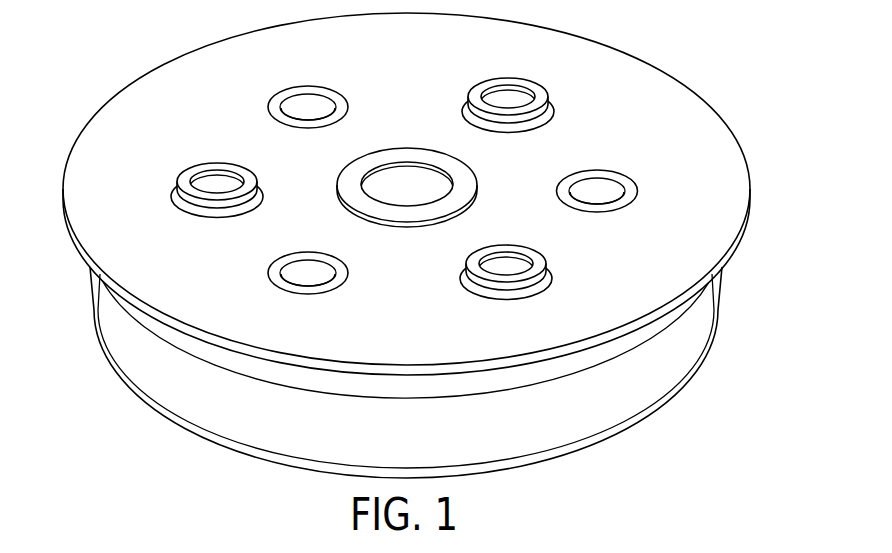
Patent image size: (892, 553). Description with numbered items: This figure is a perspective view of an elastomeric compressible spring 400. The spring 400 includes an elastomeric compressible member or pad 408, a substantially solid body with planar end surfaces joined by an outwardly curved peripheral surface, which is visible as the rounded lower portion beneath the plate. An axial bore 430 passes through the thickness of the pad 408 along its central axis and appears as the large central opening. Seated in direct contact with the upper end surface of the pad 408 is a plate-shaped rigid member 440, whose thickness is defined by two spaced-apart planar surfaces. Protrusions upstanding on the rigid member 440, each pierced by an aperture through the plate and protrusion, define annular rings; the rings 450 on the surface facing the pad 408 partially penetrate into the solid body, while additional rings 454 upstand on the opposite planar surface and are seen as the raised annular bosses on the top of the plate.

The compressible spring 400 is at (421, 245).
The rigid member 440 is at (421, 194).
The elastomeric compressible member 408 is at (675, 410).
The axial bore 430 is at (272, 98).
The ring 450 is at (630, 178).
The ring 454 is at (549, 105).